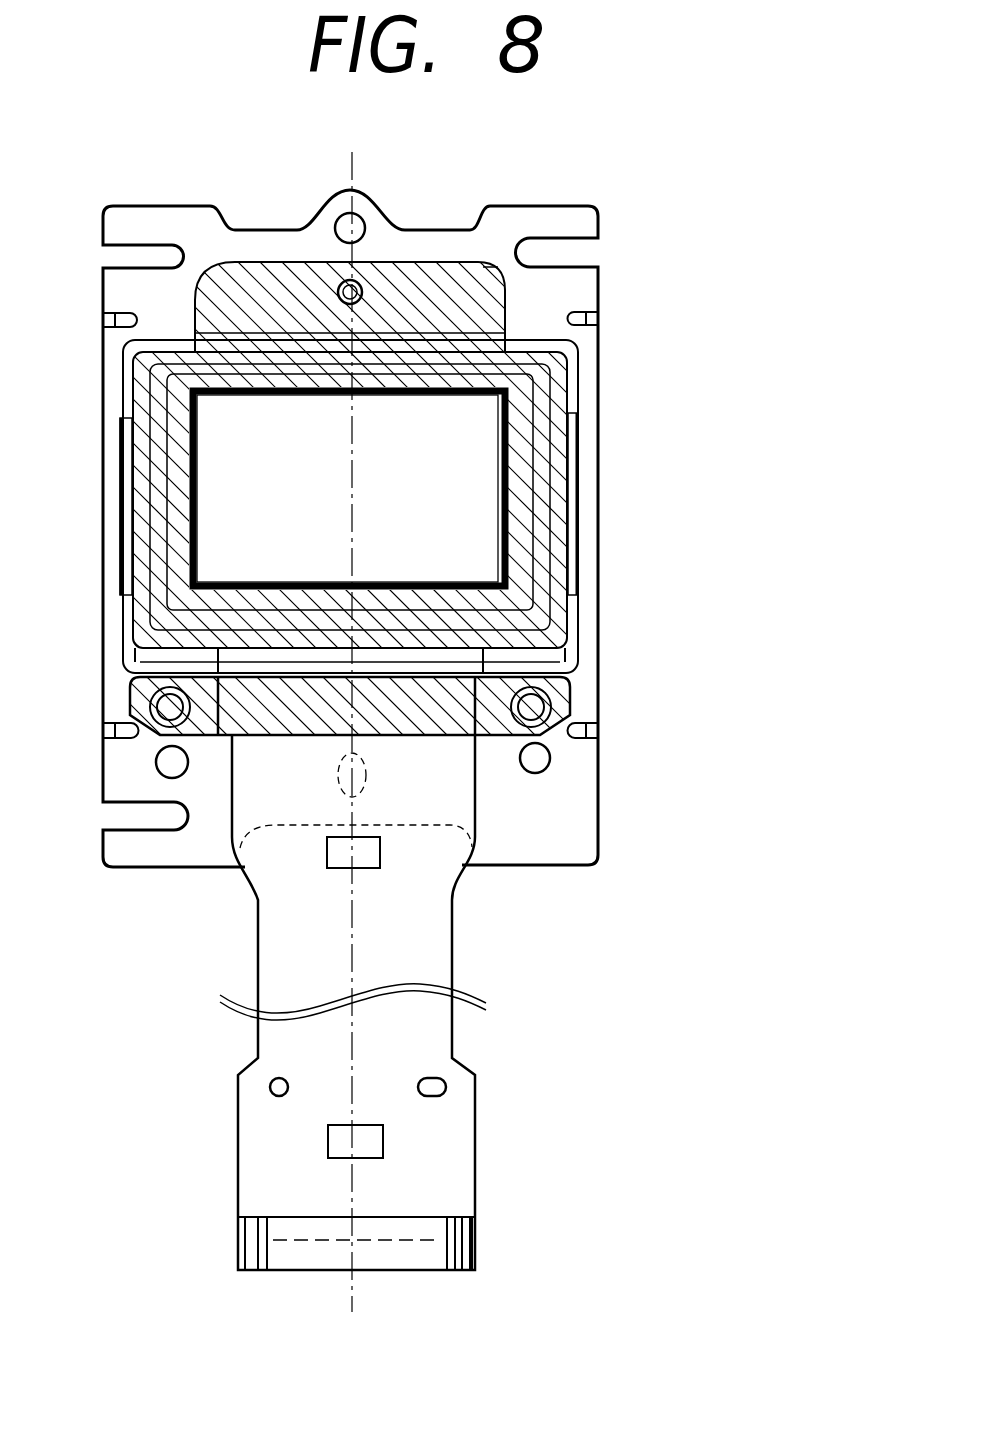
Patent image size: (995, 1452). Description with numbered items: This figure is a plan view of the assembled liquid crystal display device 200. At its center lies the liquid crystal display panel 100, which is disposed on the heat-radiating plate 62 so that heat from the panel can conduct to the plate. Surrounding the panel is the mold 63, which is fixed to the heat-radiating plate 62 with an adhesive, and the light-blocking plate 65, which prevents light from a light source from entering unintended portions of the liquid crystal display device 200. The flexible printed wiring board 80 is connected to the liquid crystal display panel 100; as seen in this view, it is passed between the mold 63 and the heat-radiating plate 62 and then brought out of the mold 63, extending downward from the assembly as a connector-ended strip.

The liquid crystal display device 200 is at (627, 352).
The liquid crystal display panel 100 is at (482, 413).
The light-blocking plate 65 is at (520, 494).
The mold 63 is at (577, 575).
The heat-radiating plate 62 is at (588, 692).
The flexible printed wiring board 80 is at (428, 957).